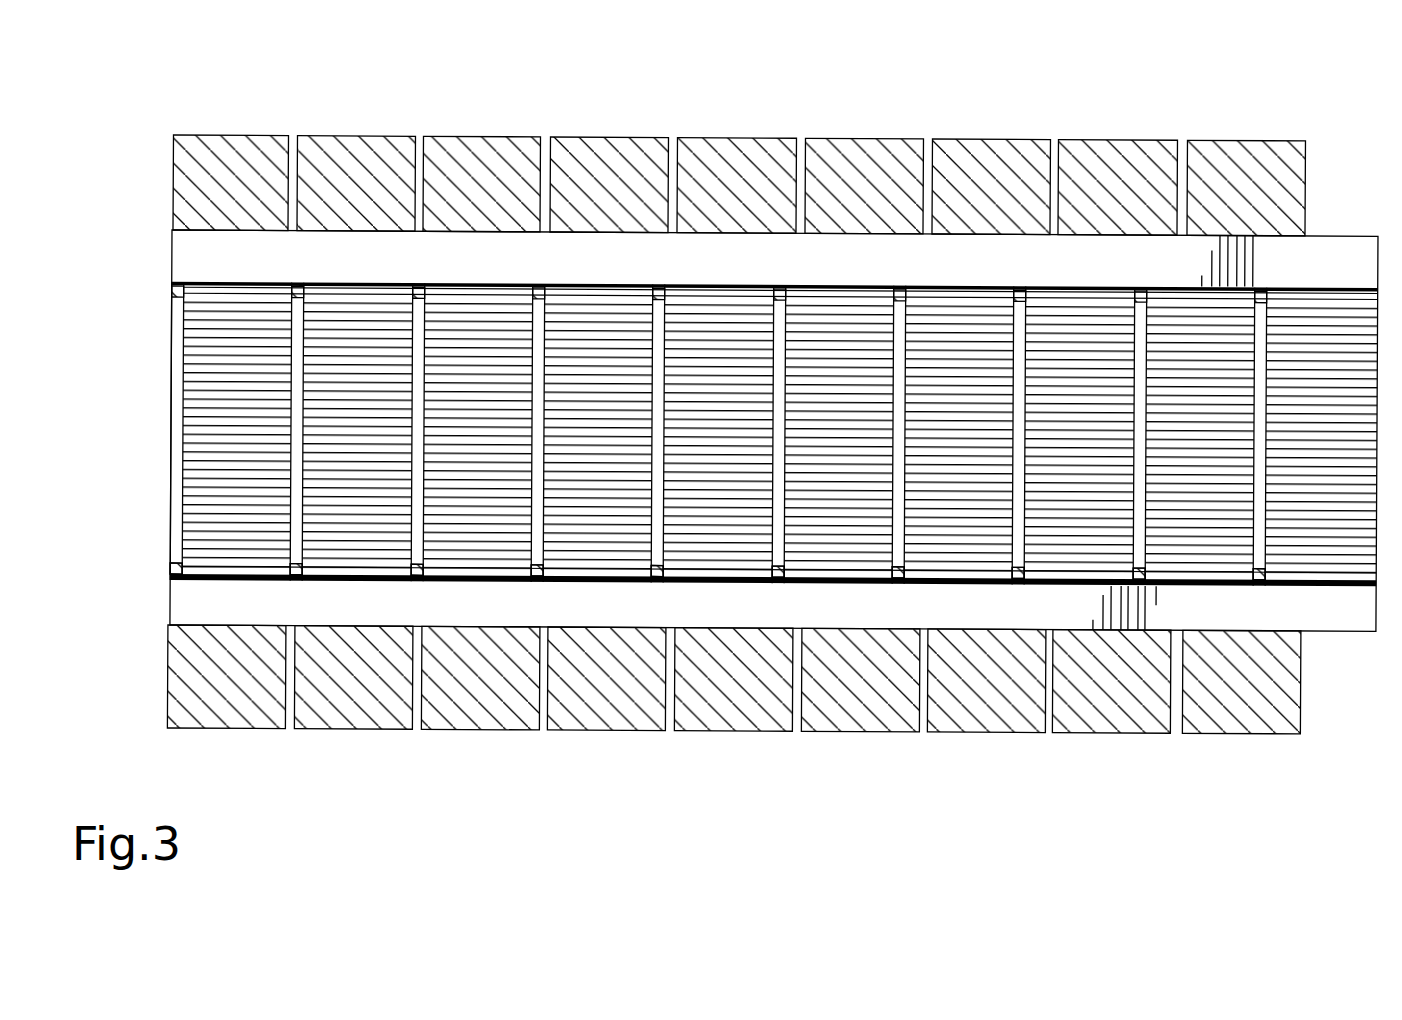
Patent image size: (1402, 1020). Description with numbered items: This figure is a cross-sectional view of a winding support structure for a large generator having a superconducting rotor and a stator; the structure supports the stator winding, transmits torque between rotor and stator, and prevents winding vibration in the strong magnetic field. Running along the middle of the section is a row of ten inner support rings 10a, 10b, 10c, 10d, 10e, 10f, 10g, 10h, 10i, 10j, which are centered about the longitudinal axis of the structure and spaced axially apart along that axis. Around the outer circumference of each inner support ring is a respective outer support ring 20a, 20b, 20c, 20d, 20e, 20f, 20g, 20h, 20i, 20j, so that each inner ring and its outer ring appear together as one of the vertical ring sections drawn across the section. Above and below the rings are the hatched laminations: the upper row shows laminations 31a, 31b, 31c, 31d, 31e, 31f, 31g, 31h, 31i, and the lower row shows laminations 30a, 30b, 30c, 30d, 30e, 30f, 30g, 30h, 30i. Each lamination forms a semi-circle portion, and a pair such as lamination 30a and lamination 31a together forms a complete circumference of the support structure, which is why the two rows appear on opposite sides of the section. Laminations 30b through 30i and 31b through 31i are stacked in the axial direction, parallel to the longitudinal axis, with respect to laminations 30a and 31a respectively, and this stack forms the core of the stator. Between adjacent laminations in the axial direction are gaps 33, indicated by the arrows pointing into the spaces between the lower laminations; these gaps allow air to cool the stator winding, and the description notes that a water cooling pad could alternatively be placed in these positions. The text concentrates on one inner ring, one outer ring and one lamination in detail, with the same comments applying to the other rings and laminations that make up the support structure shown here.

The inner support ring 10a is at (168, 572).
The inner support ring 10b is at (292, 581).
The inner support ring 10c is at (400, 581).
The inner support ring 10d is at (533, 581).
The inner support ring 10e is at (654, 581).
The inner support ring 10f is at (774, 581).
The inner support ring 10g is at (894, 581).
The inner support ring 10h is at (1014, 581).
The inner support ring 10i is at (1135, 581).
The inner support ring 10j is at (1255, 581).
The outer support ring 20a is at (177, 283).
The outer support ring 20b is at (297, 283).
The outer support ring 20c is at (418, 283).
The outer support ring 20d is at (538, 283).
The outer support ring 20e is at (658, 283).
The outer support ring 20f is at (779, 283).
The outer support ring 20g is at (899, 283).
The outer support ring 20h is at (1019, 283).
The outer support ring 20i is at (1140, 283).
The outer support ring 20j is at (1261, 283).
The lamination 30a is at (213, 705).
The lamination 30b is at (343, 705).
The lamination 30c is at (493, 718).
The lamination 30d is at (648, 704).
The lamination 30e is at (752, 706).
The lamination 30f is at (862, 706).
The lamination 30g is at (1012, 709).
The lamination 30h is at (1110, 708).
The lamination 30i is at (1268, 707).
The lamination 31a is at (223, 152).
The lamination 31b is at (348, 163).
The lamination 31c is at (488, 162).
The lamination 31d is at (610, 160).
The lamination 31e is at (728, 160).
The lamination 31f is at (846, 162).
The lamination 31g is at (964, 160).
The lamination 31h is at (1088, 157).
The lamination 31i is at (1210, 172).
The gap 33 is at (290, 731).